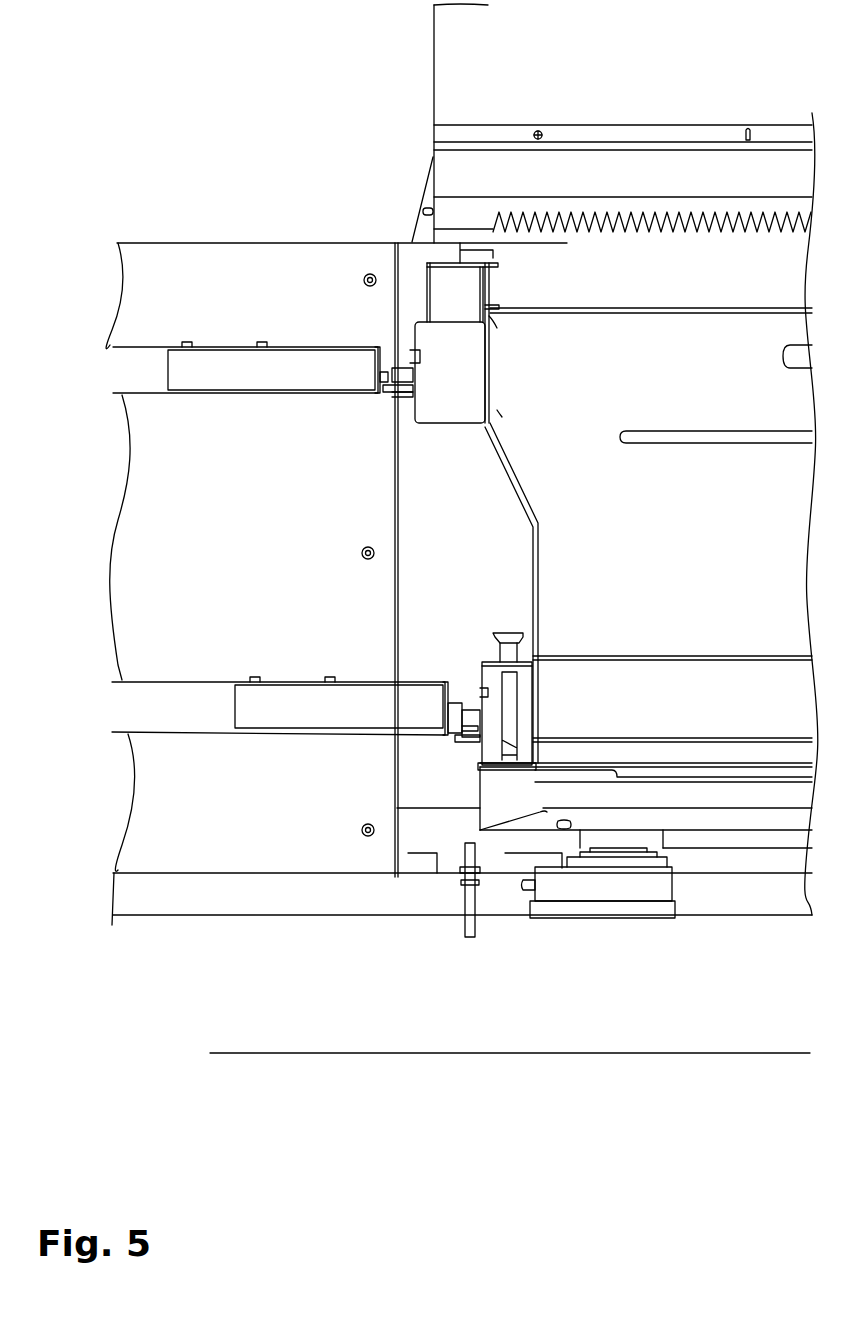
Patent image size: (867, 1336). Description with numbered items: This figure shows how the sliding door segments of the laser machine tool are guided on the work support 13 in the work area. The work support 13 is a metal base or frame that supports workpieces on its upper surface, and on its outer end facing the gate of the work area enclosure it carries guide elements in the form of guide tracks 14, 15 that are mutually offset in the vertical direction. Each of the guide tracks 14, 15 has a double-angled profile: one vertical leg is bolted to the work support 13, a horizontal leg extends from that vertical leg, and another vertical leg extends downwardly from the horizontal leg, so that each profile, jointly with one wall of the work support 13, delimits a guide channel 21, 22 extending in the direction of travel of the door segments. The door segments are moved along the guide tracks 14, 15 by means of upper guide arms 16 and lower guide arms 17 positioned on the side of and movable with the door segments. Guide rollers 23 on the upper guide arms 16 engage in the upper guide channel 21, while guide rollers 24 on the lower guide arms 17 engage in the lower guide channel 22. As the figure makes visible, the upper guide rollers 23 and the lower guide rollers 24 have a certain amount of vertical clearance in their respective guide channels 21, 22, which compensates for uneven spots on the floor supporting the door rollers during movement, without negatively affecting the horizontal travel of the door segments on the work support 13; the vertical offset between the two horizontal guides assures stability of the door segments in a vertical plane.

The work support 13 is at (737, 520).
The guide track 14 is at (393, 372).
The guide track 15 is at (455, 700).
The upper guide arm 16 is at (248, 360).
The lower guide arm 17 is at (277, 713).
The upper guide channel 21 is at (400, 373).
The lower guide channel 22 is at (472, 712).
The upper guide roller 23 is at (392, 391).
The lower guide roller 24 is at (466, 738).